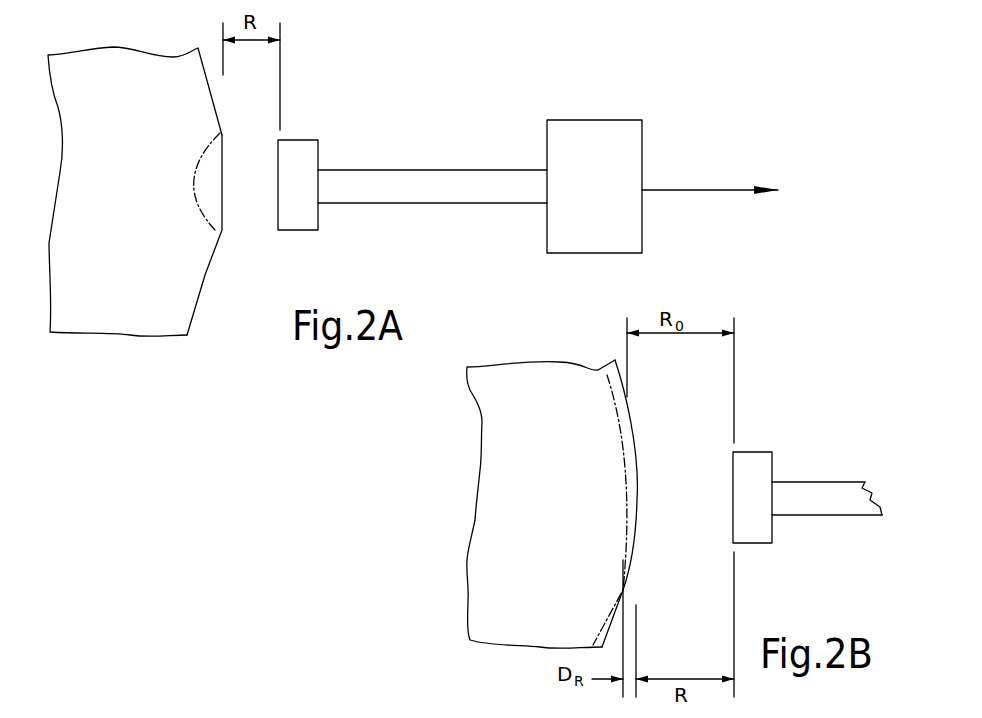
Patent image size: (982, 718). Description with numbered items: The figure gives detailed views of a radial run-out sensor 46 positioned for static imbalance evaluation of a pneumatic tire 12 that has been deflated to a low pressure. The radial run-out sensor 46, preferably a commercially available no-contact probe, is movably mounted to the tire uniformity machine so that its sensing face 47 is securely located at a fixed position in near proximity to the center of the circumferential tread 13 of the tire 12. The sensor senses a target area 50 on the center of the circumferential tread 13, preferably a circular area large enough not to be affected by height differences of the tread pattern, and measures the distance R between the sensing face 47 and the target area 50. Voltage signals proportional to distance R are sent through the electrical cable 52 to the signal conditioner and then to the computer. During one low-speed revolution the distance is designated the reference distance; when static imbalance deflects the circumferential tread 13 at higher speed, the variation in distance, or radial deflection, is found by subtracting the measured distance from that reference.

In FIG. 2A, the pneumatic tire 12 is at (135, 312).
In FIG. 2B, the pneumatic tire 12 is at (482, 565).
In FIG. 2A, the circumferential tread 13 is at (205, 297).
In FIG. 2B, the circumferential tread 13 is at (623, 383).
In FIG. 2A, the radial run-out sensor 46 is at (567, 108).
In FIG. 2B, the radial run-out sensor 46 is at (790, 472).
In FIG. 2A, the sensing face 47 is at (277, 207).
In FIG. 2B, the sensing face 47 is at (732, 495).
In FIG. 2A, the target area 50 is at (213, 202).
In FIG. 2A, the electrical cable 52 is at (665, 187).